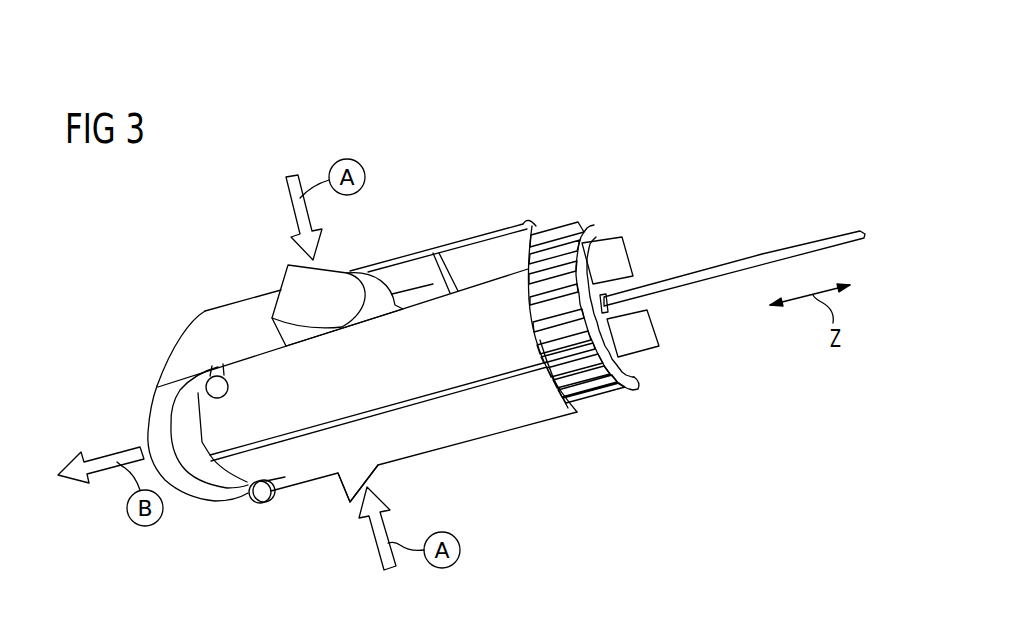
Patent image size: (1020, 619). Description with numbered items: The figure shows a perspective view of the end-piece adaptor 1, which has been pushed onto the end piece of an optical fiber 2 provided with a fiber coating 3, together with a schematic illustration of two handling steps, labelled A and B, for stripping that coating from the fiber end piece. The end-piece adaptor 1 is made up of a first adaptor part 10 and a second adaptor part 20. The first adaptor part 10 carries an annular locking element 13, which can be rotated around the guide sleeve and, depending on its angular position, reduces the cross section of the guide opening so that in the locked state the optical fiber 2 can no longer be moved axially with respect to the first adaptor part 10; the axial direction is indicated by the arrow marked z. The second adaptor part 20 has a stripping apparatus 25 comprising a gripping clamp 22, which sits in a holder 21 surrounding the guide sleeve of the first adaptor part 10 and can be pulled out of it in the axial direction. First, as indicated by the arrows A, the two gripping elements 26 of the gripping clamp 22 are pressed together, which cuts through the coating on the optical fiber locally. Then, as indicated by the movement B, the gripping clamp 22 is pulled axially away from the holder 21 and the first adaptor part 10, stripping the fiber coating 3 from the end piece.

The end-piece adaptor 1 is at (180, 262).
The optical fiber 2 is at (734, 251).
The fiber coating 3 is at (740, 267).
The first adaptor part 10 is at (559, 230).
The locking element 13 is at (594, 283).
The second adaptor part 20 is at (327, 280).
The holder 21 is at (265, 372).
The gripping clamp 22 is at (157, 418).
The stripping apparatus 25 is at (293, 493).
The gripping elements 26 is at (275, 269).